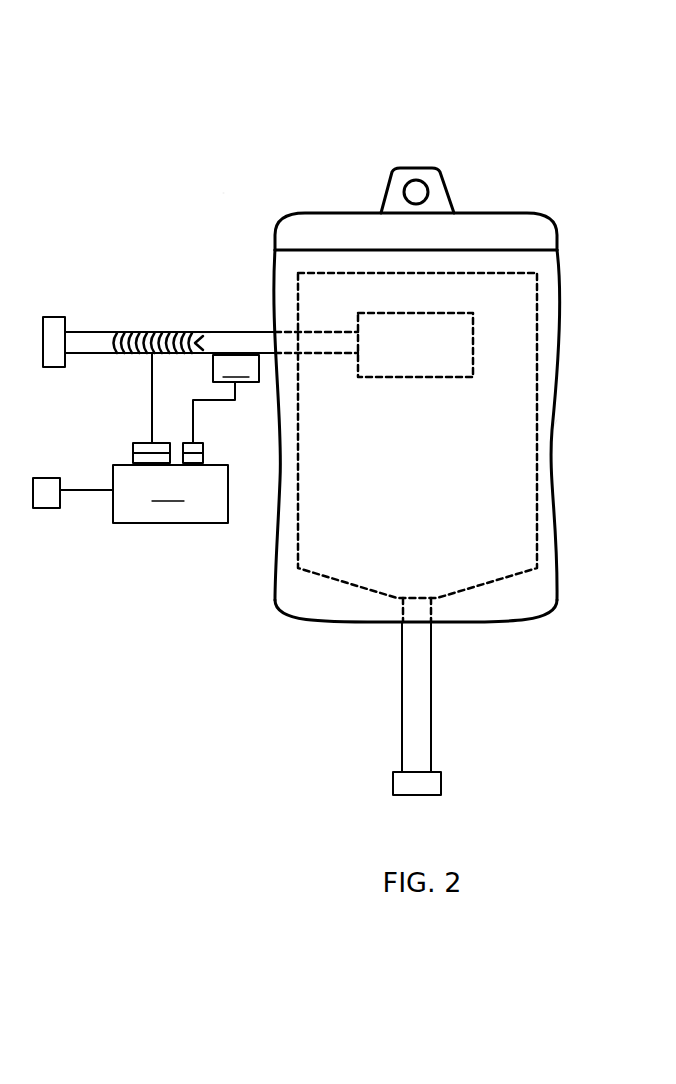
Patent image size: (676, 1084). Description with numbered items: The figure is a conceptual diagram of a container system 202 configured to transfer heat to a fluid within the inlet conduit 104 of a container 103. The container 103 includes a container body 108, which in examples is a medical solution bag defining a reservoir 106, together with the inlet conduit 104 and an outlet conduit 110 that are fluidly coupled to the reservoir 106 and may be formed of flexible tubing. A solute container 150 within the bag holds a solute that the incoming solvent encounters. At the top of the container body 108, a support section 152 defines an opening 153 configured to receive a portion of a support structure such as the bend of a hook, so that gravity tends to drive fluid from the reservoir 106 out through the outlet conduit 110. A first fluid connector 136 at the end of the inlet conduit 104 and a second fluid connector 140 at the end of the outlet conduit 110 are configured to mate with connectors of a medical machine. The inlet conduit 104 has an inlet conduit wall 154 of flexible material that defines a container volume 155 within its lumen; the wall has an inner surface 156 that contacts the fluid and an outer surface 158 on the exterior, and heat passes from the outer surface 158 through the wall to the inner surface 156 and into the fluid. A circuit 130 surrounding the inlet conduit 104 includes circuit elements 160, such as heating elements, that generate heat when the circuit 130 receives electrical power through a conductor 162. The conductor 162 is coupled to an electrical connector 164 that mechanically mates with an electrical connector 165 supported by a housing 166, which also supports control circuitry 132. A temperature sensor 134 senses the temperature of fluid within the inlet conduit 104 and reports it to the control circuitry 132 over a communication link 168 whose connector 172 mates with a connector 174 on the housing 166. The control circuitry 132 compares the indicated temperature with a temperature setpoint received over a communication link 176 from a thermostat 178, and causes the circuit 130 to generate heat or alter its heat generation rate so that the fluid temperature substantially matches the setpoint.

The container system 202 is at (231, 184).
The opening 153 is at (417, 190).
The support section 152 is at (440, 201).
The container body 108 is at (562, 312).
The container 103 is at (568, 412).
The solute container 150 is at (452, 358).
The reservoir 106 is at (348, 553).
The outlet conduit 110 is at (402, 703).
The second fluid connector 140 is at (427, 783).
The inlet conduit 104 is at (97, 353).
The first fluid connector 136 is at (53, 332).
The circuit elements 160 is at (130, 333).
The circuit 130 is at (153, 313).
The inlet conduit wall 154 is at (195, 332).
The outer surface 158 is at (205, 332).
The inner surface 156 is at (250, 340).
The container volume 155 is at (208, 352).
The temperature sensor 134 is at (236, 368).
The communication link 168 is at (193, 423).
The conductor 162 is at (152, 407).
The electrical connector 164 is at (133, 448).
The electrical connector 165 is at (133, 460).
The connector 172 is at (203, 448).
The connector 174 is at (203, 458).
The control circuitry 132 is at (170, 494).
The housing 166 is at (160, 523).
The communication link 176 is at (100, 490).
The thermostat 178 is at (45, 497).